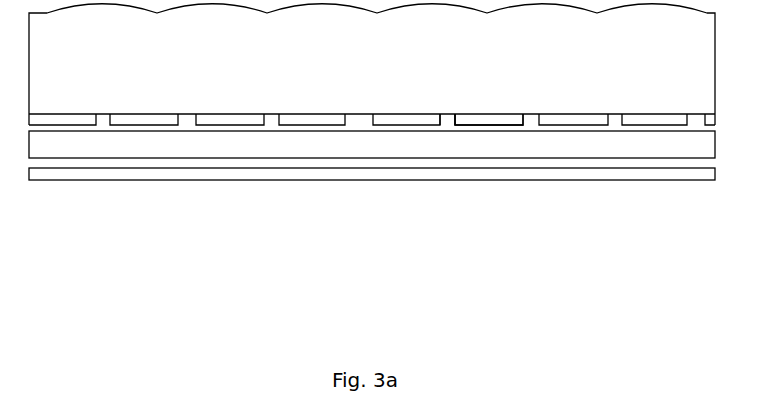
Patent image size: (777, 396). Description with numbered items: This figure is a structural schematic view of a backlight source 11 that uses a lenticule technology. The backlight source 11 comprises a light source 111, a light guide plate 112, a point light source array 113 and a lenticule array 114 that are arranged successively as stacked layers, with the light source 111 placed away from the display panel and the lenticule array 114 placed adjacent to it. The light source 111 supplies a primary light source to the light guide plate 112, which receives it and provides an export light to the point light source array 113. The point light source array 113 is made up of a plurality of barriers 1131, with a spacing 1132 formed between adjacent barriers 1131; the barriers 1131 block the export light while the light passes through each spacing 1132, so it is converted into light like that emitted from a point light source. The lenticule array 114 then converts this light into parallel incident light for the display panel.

The backlight source 11 is at (372, 150).
The light source 111 is at (550, 264).
The light guide plate 112 is at (330, 145).
The point light source array 113 is at (372, 188).
The barrier 1131 is at (491, 120).
The spacing 1132 is at (447, 117).
The lenticule array 114 is at (639, 78).